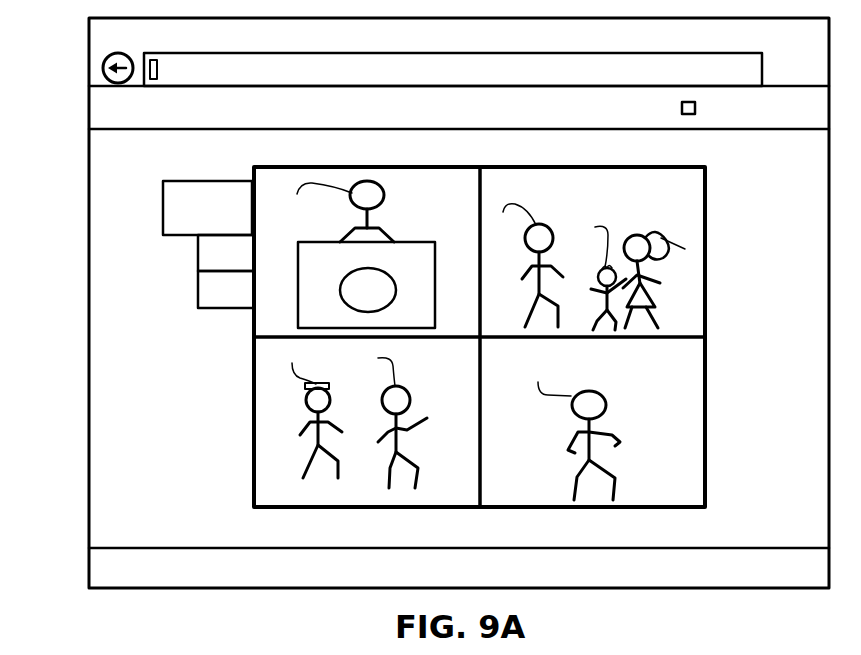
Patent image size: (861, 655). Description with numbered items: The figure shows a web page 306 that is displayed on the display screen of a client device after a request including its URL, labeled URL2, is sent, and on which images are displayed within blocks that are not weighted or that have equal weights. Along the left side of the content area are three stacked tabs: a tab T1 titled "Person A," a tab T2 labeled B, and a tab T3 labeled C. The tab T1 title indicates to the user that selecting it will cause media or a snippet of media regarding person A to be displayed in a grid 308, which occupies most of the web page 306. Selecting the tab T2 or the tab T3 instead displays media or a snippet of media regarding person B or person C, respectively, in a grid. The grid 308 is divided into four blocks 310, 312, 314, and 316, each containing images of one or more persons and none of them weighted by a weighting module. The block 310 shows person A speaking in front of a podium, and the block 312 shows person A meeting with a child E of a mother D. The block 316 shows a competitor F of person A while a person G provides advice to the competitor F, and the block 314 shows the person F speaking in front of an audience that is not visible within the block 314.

The web page 306 is at (77, 128).
The grid 308 is at (513, 507).
The block 310 is at (460, 209).
The block 312 is at (690, 209).
The block 314 is at (683, 377).
The block 316 is at (458, 379).
The tab T1 is at (195, 181).
The tab T2 is at (198, 255).
The tab T3 is at (223, 310).